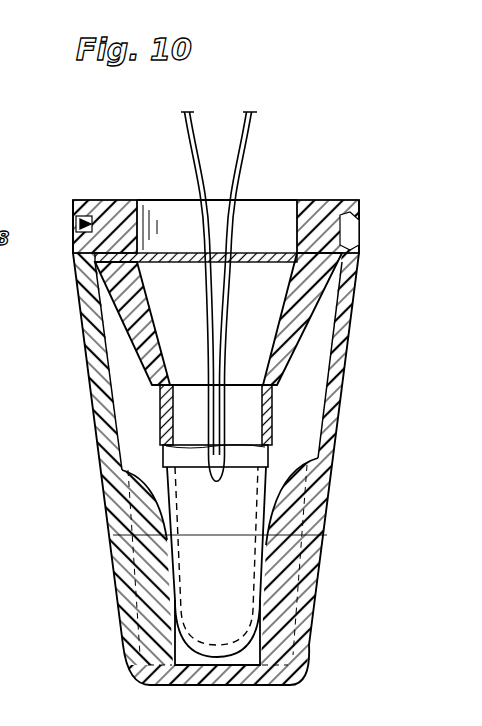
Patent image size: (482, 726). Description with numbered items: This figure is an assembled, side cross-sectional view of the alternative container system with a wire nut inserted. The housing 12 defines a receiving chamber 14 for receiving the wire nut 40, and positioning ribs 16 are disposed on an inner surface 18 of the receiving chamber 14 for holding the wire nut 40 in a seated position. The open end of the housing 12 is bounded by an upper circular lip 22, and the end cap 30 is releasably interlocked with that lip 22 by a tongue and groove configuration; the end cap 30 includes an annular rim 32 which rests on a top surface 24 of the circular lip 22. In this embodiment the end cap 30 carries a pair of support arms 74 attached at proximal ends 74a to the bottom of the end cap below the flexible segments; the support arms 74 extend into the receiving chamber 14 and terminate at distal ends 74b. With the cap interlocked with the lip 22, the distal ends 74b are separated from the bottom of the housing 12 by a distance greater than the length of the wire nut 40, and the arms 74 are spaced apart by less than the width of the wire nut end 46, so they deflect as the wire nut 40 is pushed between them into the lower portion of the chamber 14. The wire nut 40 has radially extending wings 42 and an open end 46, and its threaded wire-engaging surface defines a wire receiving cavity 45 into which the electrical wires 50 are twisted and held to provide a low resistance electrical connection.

The housing 12 is at (0, 97).
The receiving chamber 14 is at (0, 130).
The positioning ribs 16 is at (12, 173).
The inner surface 18 is at (0, 58).
The circular lip 22 is at (83, 221).
The top surface 24 is at (352, 200).
The end cap 30 is at (318, 200).
The annular rim 32 is at (362, 228).
The wire nut 40 is at (322, 463).
The wings 42 is at (204, 482).
The wire receiving cavity 45 is at (235, 383).
The open end 46 is at (265, 397).
The electrical wires 50 is at (233, 153).
The support arms 74 is at (127, 330).
The proximal ends 74a is at (110, 268).
The distal ends 74b is at (157, 390).